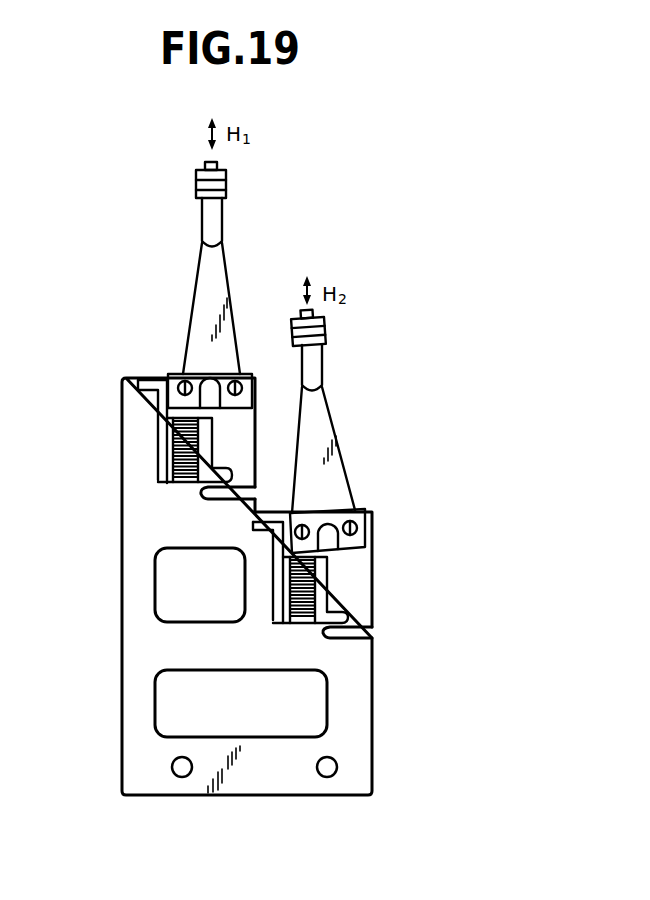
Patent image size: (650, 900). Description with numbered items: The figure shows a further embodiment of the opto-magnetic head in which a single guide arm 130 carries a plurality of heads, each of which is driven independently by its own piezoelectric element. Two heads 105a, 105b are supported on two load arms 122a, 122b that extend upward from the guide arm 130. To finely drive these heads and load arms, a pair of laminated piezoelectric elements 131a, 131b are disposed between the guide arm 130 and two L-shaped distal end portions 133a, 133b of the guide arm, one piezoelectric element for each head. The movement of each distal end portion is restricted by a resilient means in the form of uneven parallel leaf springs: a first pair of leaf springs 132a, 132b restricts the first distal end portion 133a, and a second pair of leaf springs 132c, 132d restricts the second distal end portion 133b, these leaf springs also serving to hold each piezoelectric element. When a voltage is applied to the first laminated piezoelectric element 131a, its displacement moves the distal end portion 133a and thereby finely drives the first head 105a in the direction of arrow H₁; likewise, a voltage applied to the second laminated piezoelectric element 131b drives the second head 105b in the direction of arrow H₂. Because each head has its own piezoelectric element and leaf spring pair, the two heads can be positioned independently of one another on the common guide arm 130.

The guide arm 130 is at (373, 700).
The head 105a is at (196, 187).
The head 105b is at (325, 323).
The load arm 122a is at (210, 281).
The load arm 122b is at (326, 432).
The laminated piezoelectric element 131a is at (175, 457).
The laminated piezoelectric element 131b is at (315, 587).
The uneven parallel leaf spring 132a is at (150, 380).
The uneven parallel leaf spring 132b is at (208, 500).
The uneven parallel leaf spring 132c is at (267, 515).
The uneven parallel leaf spring 132d is at (328, 638).
The L-shaped distal end portion of the guide arm 133a is at (247, 420).
The L-shaped distal end portion of the guide arm 133b is at (357, 567).